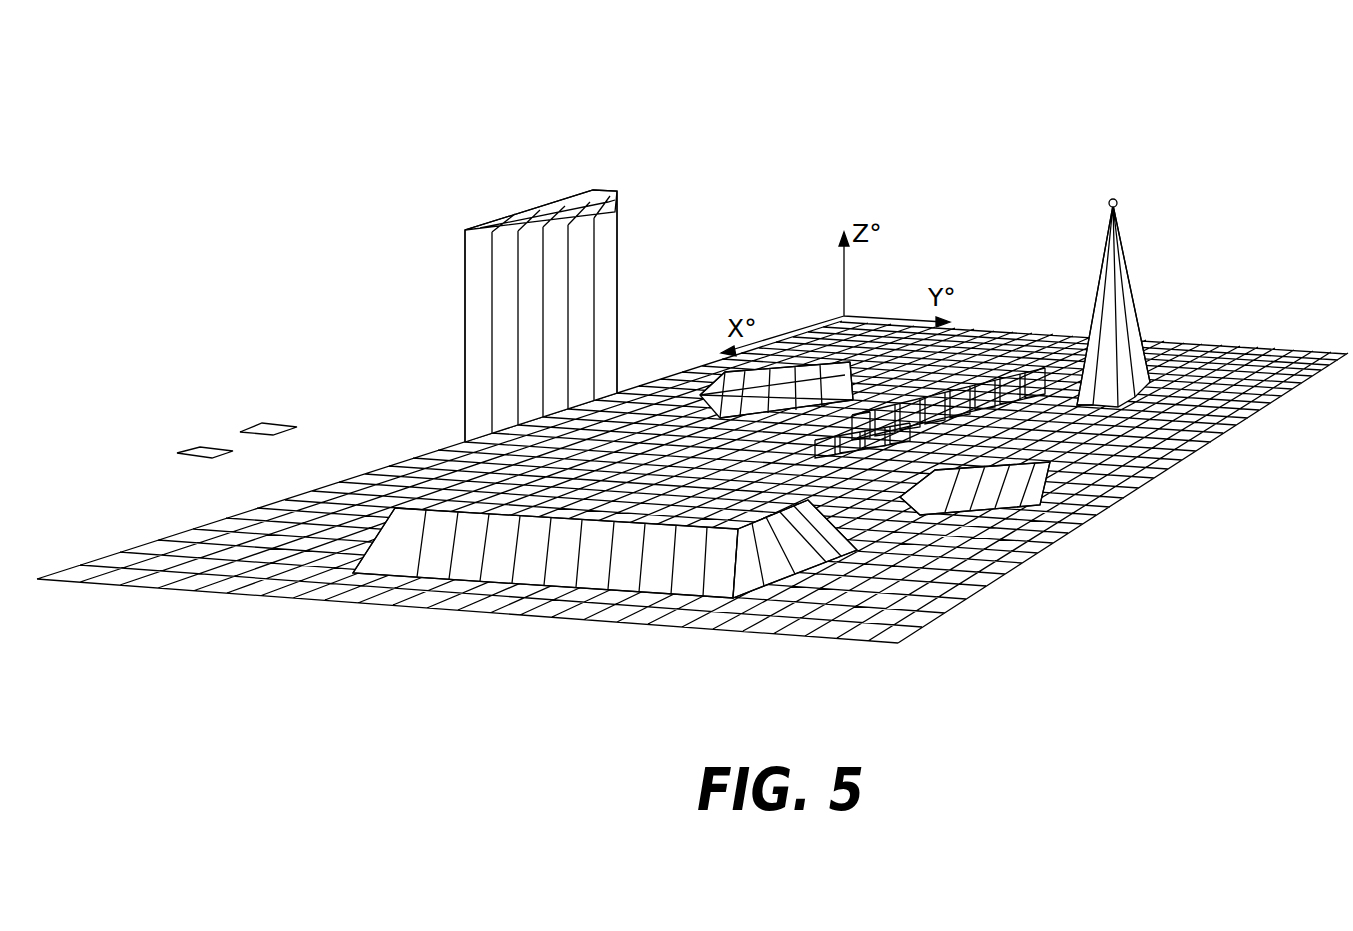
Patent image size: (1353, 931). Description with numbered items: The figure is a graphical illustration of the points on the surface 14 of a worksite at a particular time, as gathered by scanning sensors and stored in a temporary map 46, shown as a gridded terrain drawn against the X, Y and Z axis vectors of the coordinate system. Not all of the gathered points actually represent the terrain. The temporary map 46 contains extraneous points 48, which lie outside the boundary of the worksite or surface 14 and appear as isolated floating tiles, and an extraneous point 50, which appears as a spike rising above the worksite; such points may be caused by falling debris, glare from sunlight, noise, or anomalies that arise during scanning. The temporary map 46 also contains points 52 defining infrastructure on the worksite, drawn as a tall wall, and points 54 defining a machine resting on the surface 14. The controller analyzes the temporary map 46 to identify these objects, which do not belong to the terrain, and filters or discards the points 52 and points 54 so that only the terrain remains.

The surface 14 is at (610, 432).
The temporary map 46 is at (876, 166).
The extraneous points 48 is at (218, 420).
The extraneous point 50 is at (1116, 200).
The points defining infrastructure 52 is at (625, 218).
The points defining a machine 54 is at (1000, 364).